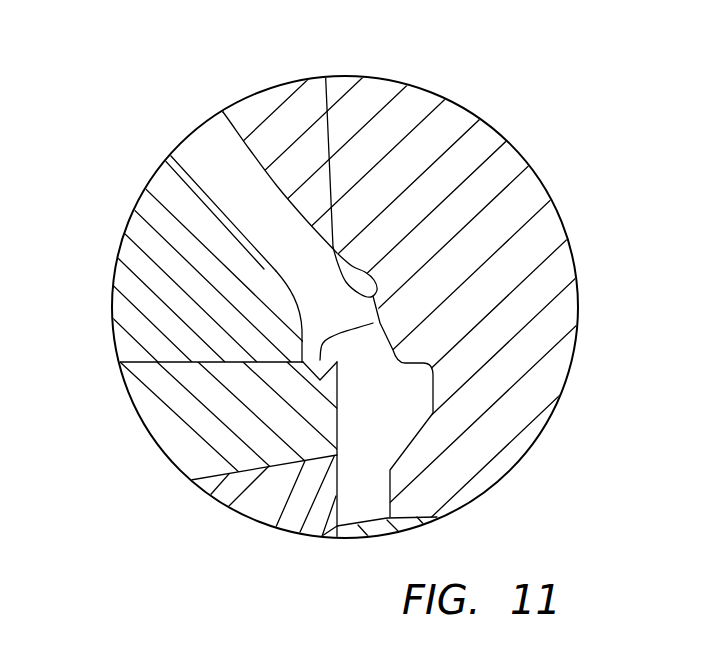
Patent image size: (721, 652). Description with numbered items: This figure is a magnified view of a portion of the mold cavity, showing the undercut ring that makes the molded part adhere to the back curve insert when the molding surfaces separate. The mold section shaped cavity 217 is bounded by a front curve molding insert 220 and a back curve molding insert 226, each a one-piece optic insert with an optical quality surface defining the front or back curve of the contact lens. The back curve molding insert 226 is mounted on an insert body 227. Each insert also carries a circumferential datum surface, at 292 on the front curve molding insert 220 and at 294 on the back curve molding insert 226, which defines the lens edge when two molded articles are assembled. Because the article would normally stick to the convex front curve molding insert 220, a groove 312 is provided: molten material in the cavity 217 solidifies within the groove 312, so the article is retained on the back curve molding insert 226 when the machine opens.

The mold section shaped cavity 217 is at (243, 197).
The front curve molding insert 220 is at (447, 121).
The back curve molding insert 226 is at (153, 212).
The insert body 227 is at (176, 413).
The datum surface 292 is at (325, 62).
The datum surface 294 is at (286, 292).
The groove 312 is at (373, 323).